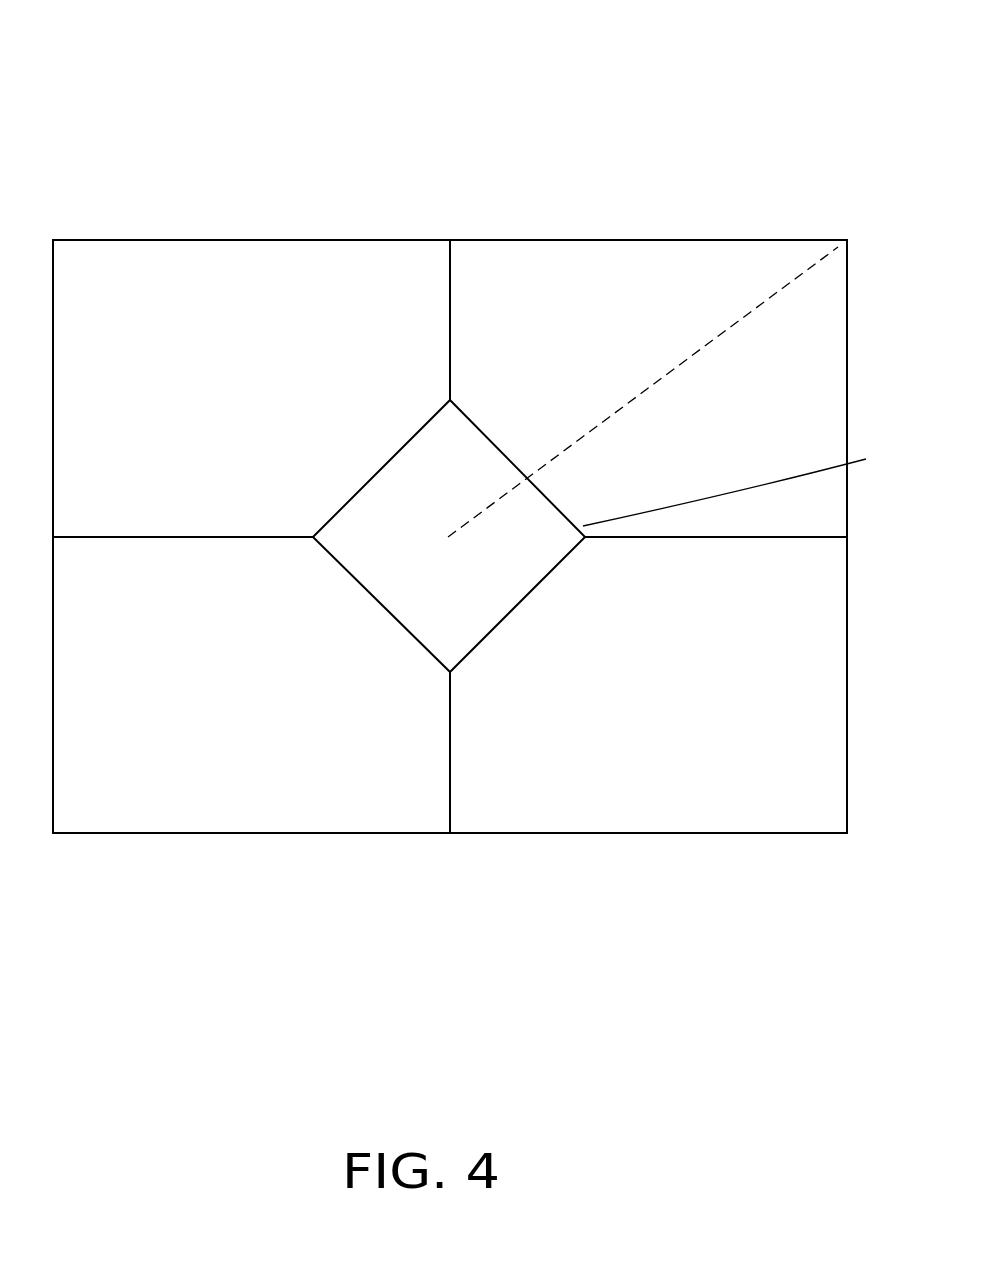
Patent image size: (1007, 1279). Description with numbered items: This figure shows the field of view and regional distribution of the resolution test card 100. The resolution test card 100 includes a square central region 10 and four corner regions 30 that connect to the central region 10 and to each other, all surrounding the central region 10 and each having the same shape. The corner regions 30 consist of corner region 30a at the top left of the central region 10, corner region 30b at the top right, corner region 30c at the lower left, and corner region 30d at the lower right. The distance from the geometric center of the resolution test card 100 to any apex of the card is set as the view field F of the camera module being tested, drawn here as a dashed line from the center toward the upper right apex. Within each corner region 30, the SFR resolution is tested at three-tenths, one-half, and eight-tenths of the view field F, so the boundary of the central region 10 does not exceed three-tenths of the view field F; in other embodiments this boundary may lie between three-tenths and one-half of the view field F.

The resolution test card 100 is at (465, 58).
The corner regions 30 is at (450, 538).
The corner region 30a is at (201, 262).
The corner region 30b is at (666, 262).
The corner region 30c is at (201, 813).
The corner region 30d is at (668, 813).
The central region 10 is at (739, 486).
The view field F is at (818, 262).